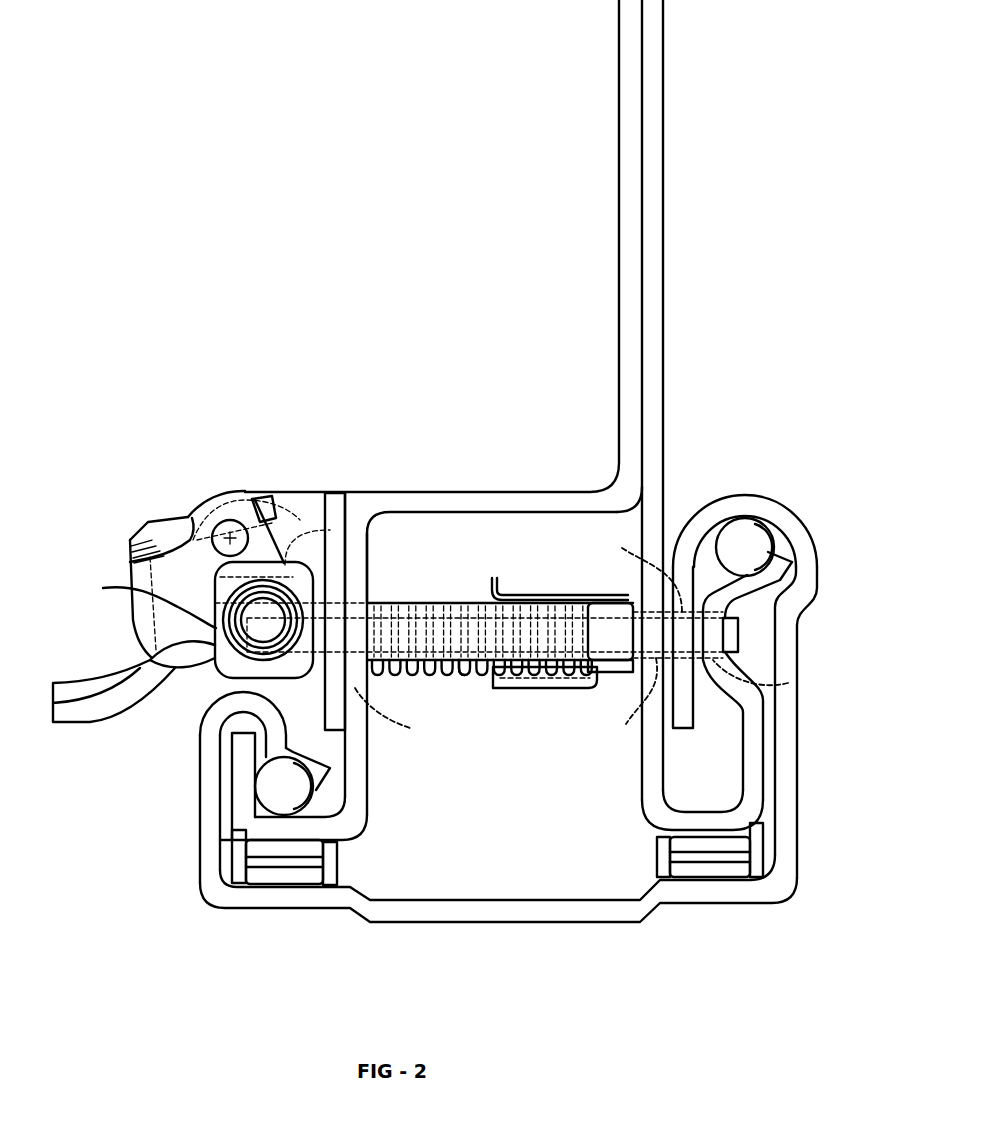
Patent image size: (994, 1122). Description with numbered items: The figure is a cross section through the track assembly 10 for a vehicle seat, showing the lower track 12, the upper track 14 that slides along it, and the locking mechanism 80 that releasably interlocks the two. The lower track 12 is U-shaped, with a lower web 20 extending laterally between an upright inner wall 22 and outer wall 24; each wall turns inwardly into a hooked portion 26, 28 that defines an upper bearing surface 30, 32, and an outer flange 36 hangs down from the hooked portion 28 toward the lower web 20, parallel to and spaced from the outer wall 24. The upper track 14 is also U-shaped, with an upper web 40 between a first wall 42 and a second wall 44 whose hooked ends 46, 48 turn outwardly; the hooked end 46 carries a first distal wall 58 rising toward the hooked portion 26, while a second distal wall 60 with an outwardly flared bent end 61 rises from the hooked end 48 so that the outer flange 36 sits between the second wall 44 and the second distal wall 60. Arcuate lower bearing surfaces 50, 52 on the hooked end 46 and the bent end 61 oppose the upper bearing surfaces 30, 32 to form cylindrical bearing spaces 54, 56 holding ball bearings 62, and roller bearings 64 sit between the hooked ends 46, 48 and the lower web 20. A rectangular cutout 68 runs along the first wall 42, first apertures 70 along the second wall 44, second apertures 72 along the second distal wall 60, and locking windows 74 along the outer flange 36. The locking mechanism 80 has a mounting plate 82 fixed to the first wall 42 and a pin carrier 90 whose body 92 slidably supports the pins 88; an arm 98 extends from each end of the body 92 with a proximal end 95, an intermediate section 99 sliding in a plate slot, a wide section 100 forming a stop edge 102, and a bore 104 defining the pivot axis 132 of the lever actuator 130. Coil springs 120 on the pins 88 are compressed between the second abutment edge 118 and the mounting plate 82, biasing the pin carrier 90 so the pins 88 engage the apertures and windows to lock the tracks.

The track assembly 10 is at (268, 226).
The lower track 12 is at (481, 745).
The upper track 14 is at (657, 182).
The lower web 20 is at (525, 912).
The inner wall 22 is at (205, 828).
The outer wall 24 is at (793, 750).
The hooked portion 26 is at (208, 722).
The hooked portion 28 is at (800, 538).
The upper bearing surface 30 is at (320, 763).
The upper bearing surface 32 is at (775, 500).
The outer flange 36 is at (700, 717).
The upper web 40 is at (523, 497).
The first wall 42 is at (363, 555).
The second wall 44 is at (625, 511).
The hooked end 46 is at (340, 828).
The hooked end 48 is at (660, 822).
The lower bearing surface 50 is at (297, 842).
The lower bearing surface 52 is at (783, 562).
The bearing space 54 is at (330, 797).
The bearing space 56 is at (800, 570).
The first distal wall 58 is at (237, 765).
The second distal wall 60 is at (770, 705).
The bent end 61 is at (812, 600).
The ball bearings 62 is at (740, 528).
The roller bearings 64 is at (307, 882).
The cutout 68 is at (394, 717).
The first apertures 70 is at (633, 707).
The second apertures 72 is at (788, 683).
The locking windows 74 is at (644, 569).
The locking mechanism 80 is at (190, 476).
The mounting plate 82 is at (343, 493).
The pins 88 is at (740, 627).
The pin carrier 90 is at (546, 690).
The body 92 is at (598, 674).
The proximal end 95 is at (630, 590).
The arm 98 is at (482, 605).
The intermediate section 99 is at (470, 600).
The wide section 100 is at (160, 658).
The stop edge 102 is at (347, 588).
The bore 104 is at (139, 605).
The second abutment edge 118 is at (558, 594).
The coil springs 120 is at (463, 668).
The lever actuator 130 is at (137, 540).
The pivot axis 132 is at (240, 520).